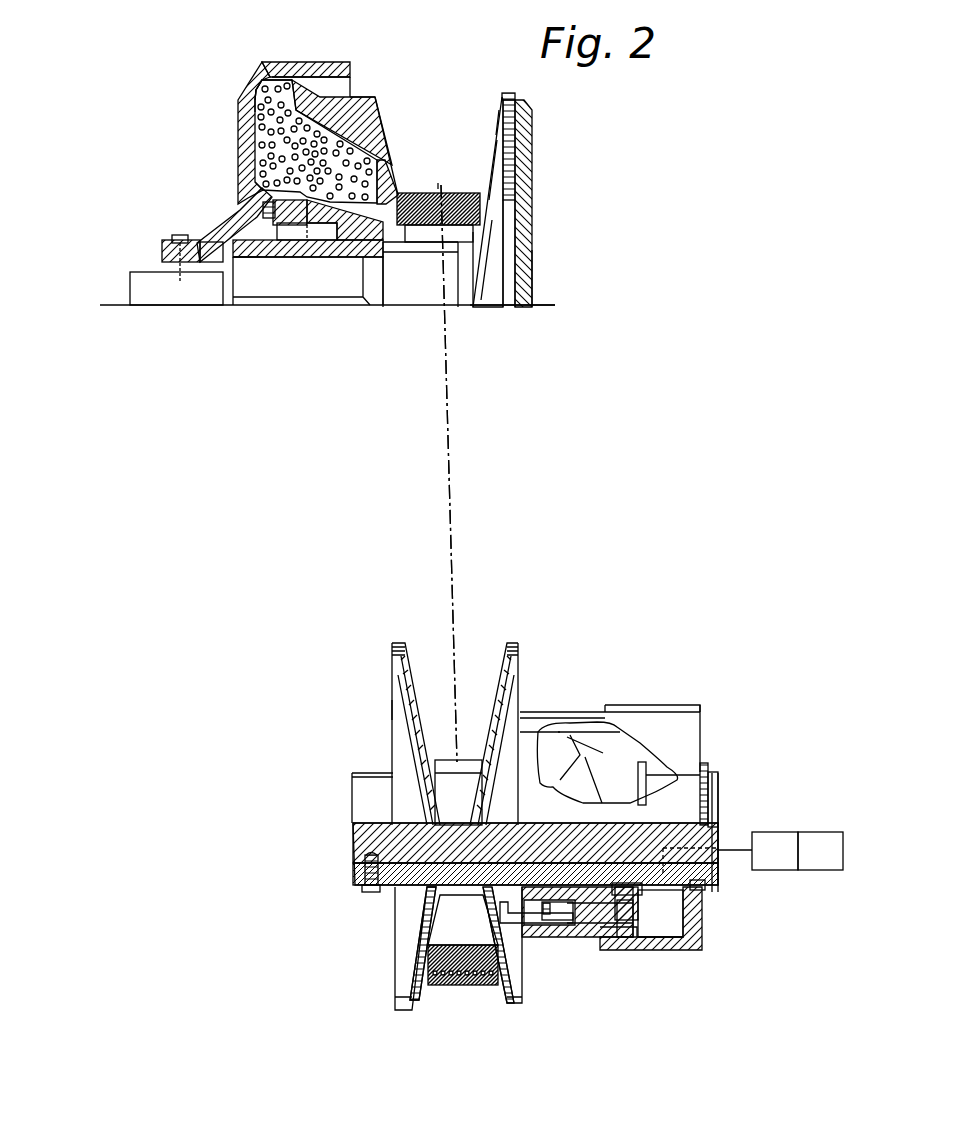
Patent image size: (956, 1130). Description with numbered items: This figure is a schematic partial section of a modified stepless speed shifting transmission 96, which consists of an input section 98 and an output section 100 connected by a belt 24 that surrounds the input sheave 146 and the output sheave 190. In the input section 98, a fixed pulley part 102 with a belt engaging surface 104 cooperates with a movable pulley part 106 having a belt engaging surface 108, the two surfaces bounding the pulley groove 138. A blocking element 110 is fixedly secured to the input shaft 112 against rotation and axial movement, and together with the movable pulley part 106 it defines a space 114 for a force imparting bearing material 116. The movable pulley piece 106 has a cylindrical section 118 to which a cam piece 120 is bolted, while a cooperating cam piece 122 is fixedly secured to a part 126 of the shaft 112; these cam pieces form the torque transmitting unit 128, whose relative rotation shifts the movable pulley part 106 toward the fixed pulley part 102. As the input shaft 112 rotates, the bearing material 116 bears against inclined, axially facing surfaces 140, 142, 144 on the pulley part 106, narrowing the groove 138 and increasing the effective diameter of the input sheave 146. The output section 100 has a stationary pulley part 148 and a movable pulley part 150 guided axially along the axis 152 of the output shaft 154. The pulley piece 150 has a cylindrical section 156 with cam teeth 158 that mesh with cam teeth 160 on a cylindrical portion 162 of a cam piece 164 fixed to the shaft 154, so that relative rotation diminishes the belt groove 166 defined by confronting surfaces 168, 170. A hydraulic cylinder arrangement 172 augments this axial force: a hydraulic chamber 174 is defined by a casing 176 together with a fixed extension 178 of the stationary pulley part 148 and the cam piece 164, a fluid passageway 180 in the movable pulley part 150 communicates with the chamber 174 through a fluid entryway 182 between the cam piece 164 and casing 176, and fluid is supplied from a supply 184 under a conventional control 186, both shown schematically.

The belt 24 is at (418, 196).
The stepless speed shifting transmission 96 is at (592, 171).
The input section 98 is at (546, 267).
The output section 100 is at (696, 687).
The fixed pulley part 102 is at (527, 147).
The belt engaging surface 104 is at (497, 127).
The movable pulley part 106 is at (367, 110).
The belt engaging surface 108 is at (397, 183).
The blocking element 110 is at (245, 105).
The input shaft 112 is at (140, 289).
The space 114 is at (330, 120).
The force imparting bearing material 116 is at (270, 93).
The cylindrical section 118 is at (358, 215).
The cam piece 120 is at (255, 232).
The cooperating cam piece 122 is at (312, 260).
The part of the shaft 126 is at (285, 278).
The torque transmitting unit 128 is at (258, 268).
The pulley groove 138 is at (459, 160).
The inclined axially facing surface 140 is at (368, 140).
The inclined axially facing surface 142 is at (300, 122).
The inclined axially facing surface 144 is at (283, 80).
The input sheave 146 is at (538, 107).
The stationary pulley part 148 is at (413, 733).
The movable pulley part 150 is at (500, 680).
The axis 152 is at (723, 823).
The output shaft 154 is at (383, 837).
The cylindrical section 156 is at (553, 742).
The cam teeth 158 is at (567, 930).
The cam teeth 160 is at (593, 930).
The cylindrical portion 162 is at (620, 930).
The cam piece 164 is at (607, 740).
The belt groove 166 is at (466, 678).
The confronting surface 168 is at (413, 683).
The confronting surface 170 is at (500, 692).
The hydraulic cylinder arrangement 172 is at (656, 920).
The hydraulic chamber 174 is at (668, 910).
The casing 176 is at (700, 937).
The fixed extension 178 is at (637, 863).
The fluid passageway 180 is at (540, 920).
The fluid entryway 182 is at (617, 930).
The supply 184 is at (839, 865).
The control 186 is at (793, 865).
The output sheave 190 is at (379, 688).